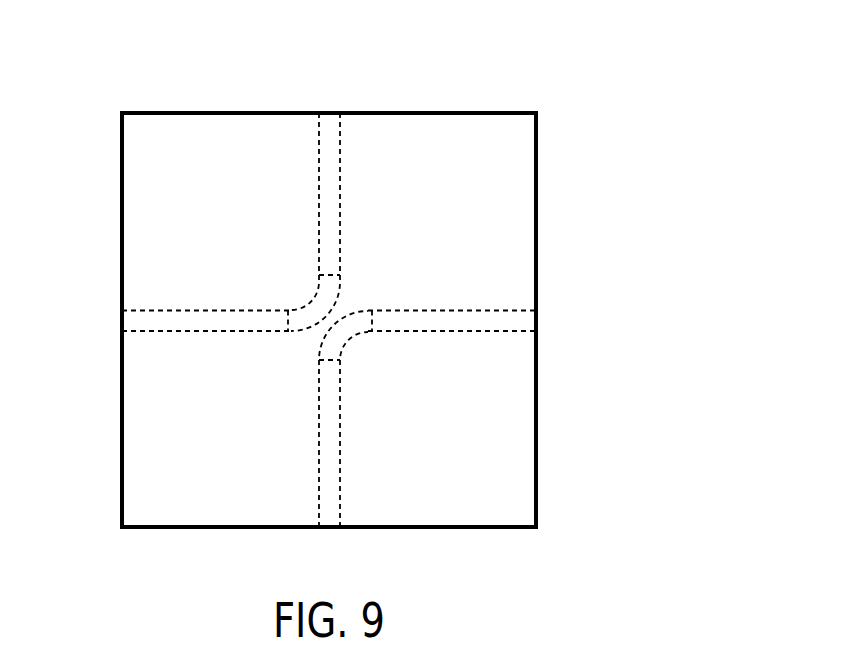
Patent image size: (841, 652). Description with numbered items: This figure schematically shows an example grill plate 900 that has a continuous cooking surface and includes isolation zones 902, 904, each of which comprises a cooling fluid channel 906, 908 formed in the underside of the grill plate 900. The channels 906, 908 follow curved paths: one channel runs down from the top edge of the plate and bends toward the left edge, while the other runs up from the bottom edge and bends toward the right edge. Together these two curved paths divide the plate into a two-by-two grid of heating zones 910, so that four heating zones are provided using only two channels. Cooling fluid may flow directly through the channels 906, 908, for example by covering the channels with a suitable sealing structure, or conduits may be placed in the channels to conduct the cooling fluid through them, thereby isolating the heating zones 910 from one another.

The grill plate 900 is at (601, 50).
The isolation zone 902 is at (341, 193).
The isolation zone 904 is at (476, 310).
The cooling fluid channel 906 is at (329, 131).
The cooling fluid channel 908 is at (522, 321).
The heating zone 910 is at (149, 196).